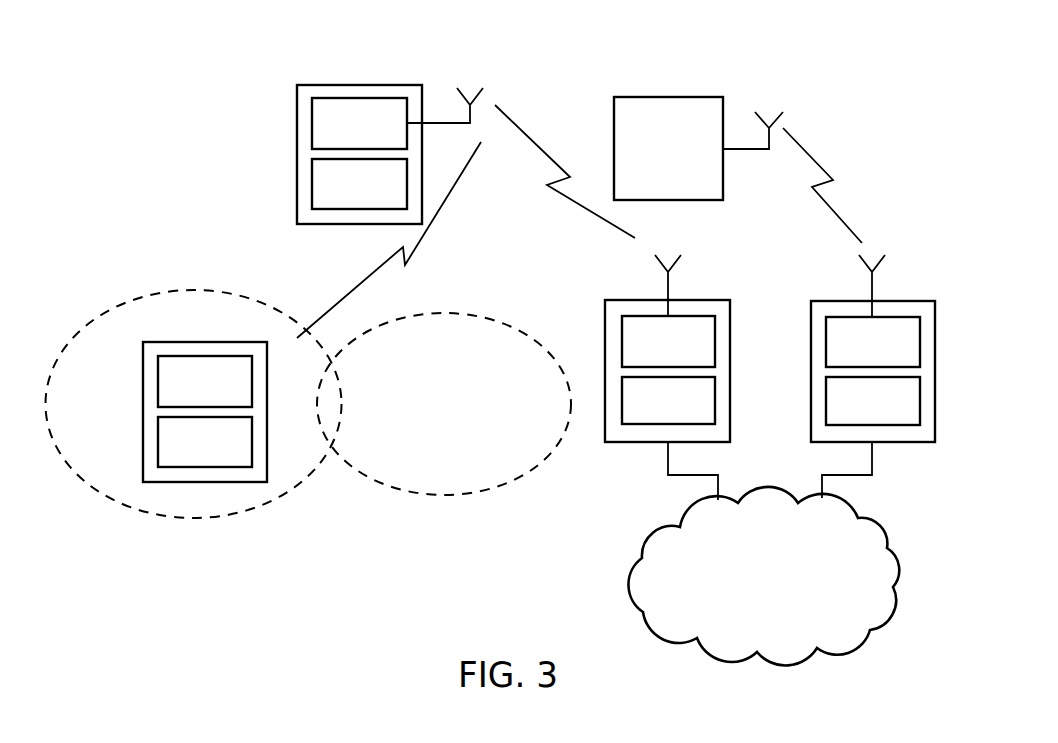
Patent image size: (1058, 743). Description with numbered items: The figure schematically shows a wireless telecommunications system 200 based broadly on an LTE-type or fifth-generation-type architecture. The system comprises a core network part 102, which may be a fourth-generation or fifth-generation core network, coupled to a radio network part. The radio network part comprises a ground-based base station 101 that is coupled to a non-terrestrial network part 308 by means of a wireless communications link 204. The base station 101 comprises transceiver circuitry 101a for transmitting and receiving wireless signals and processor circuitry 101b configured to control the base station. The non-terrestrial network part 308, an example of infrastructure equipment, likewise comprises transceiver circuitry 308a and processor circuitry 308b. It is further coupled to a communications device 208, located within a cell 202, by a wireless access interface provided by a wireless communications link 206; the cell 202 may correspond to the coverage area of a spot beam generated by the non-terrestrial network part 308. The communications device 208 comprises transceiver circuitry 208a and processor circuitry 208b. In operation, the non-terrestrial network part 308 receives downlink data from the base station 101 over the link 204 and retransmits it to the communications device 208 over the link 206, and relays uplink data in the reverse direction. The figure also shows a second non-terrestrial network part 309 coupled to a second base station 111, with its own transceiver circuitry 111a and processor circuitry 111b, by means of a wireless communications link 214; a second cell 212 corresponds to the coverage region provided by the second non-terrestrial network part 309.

The wireless telecommunications system 200 is at (163, 207).
The cell 202 is at (198, 518).
The wireless communications link 204 is at (592, 213).
The wireless communications link 206 is at (353, 287).
The communications device 208 is at (167, 412).
The transceiver circuitry 208a is at (171, 396).
The processor circuitry 208b is at (171, 456).
The second cell 212 is at (443, 497).
The wireless communications link 214 is at (827, 168).
The non-terrestrial network part 308 is at (351, 154).
The transceiver circuitry 308a is at (325, 138).
The processor circuitry 308b is at (325, 198).
The second non-terrestrial network part 309 is at (670, 97).
The base station 101 is at (682, 374).
The transceiver circuitry 101a is at (635, 356).
The processor circuitry 101b is at (635, 413).
The second base station 111 is at (888, 373).
The transceiver circuitry 111a is at (840, 356).
The processor circuitry 111b is at (840, 414).
The core network part 102 is at (885, 530).